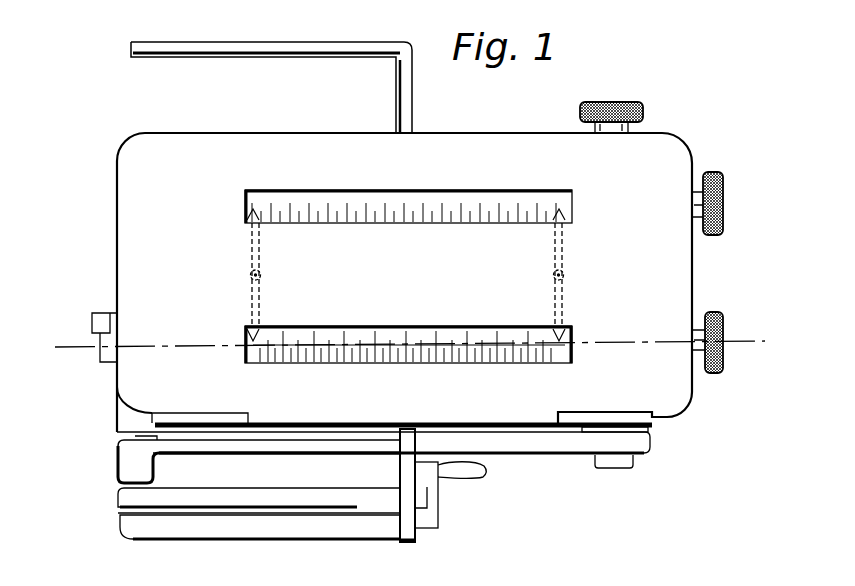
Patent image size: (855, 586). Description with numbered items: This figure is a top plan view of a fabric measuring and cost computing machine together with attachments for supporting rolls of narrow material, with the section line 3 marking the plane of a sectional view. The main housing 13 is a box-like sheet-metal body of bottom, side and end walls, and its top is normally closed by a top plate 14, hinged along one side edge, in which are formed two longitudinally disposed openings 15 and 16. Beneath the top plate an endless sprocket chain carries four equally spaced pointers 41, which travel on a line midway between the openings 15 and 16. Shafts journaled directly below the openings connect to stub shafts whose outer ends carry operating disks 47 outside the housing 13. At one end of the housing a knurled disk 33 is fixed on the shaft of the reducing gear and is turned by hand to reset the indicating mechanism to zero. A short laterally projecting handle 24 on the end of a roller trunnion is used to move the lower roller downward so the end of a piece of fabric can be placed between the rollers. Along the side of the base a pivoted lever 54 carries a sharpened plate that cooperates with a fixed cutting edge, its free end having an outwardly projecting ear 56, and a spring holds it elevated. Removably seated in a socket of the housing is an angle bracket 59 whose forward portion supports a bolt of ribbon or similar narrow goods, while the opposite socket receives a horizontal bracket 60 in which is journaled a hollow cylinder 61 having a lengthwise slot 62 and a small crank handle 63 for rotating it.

The section line 3- 3 is at (405, 346).
The main housing 13 is at (112, 260).
The top plate 14 is at (402, 354).
The longitudinally disposed opening 15 is at (567, 203).
The longitudinally disposed opening 16 is at (607, 329).
The handle 24 is at (97, 321).
The disk 33 is at (645, 103).
The pointer 41 is at (247, 219).
The operating disk 47 is at (719, 235).
The lever 54 is at (575, 448).
The ear 56 is at (125, 459).
The angle bracket 59 is at (243, 44).
The bracket 60 is at (403, 463).
The hollow cylinder 61 is at (285, 529).
The slot 62 is at (199, 515).
The crank handle 63 is at (441, 488).